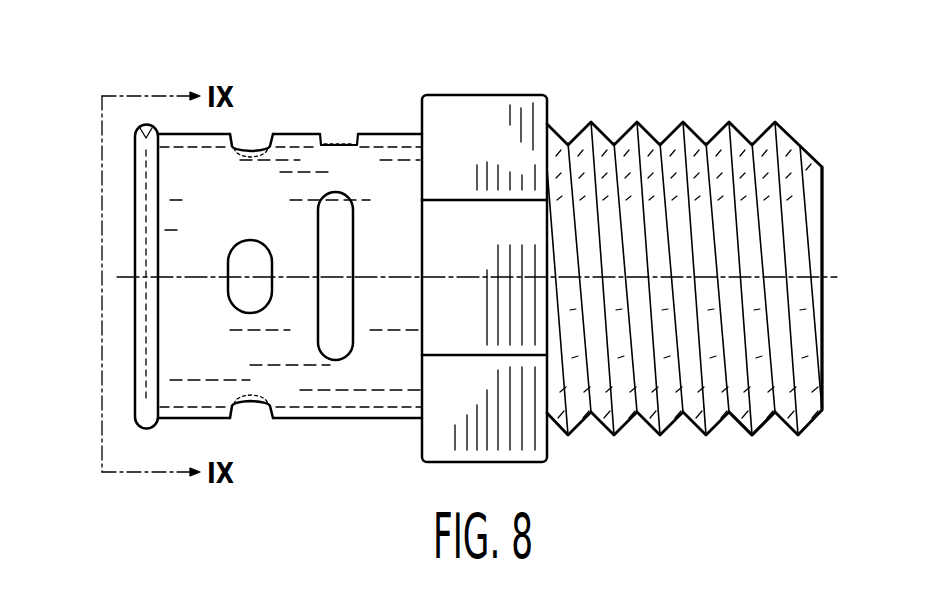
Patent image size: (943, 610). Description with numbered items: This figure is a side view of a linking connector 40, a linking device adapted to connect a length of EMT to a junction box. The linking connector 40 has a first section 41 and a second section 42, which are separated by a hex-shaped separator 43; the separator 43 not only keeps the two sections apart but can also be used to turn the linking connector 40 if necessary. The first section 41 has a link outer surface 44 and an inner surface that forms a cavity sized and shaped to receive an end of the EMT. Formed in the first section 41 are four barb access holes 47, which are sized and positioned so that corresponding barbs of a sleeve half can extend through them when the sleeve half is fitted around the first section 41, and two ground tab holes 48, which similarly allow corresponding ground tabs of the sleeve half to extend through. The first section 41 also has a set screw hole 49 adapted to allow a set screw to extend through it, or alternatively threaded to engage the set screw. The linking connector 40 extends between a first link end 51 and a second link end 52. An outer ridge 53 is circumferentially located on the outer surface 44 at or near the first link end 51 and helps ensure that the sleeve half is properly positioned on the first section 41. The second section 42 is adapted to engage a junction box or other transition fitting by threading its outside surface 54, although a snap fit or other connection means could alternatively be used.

The linking connector 40 is at (792, 80).
The first section 41 is at (298, 132).
The second section 42 is at (685, 121).
The hex-shaped separator 43 is at (478, 107).
The link outer surface 44 is at (190, 233).
The barb access holes 47 is at (253, 133).
The ground tab holes 48 is at (337, 342).
The set screw hole 49 is at (341, 137).
The first link end 51 is at (134, 182).
The second link end 52 is at (823, 217).
The outer ridge 53 is at (147, 126).
The outside surface 54 is at (756, 434).